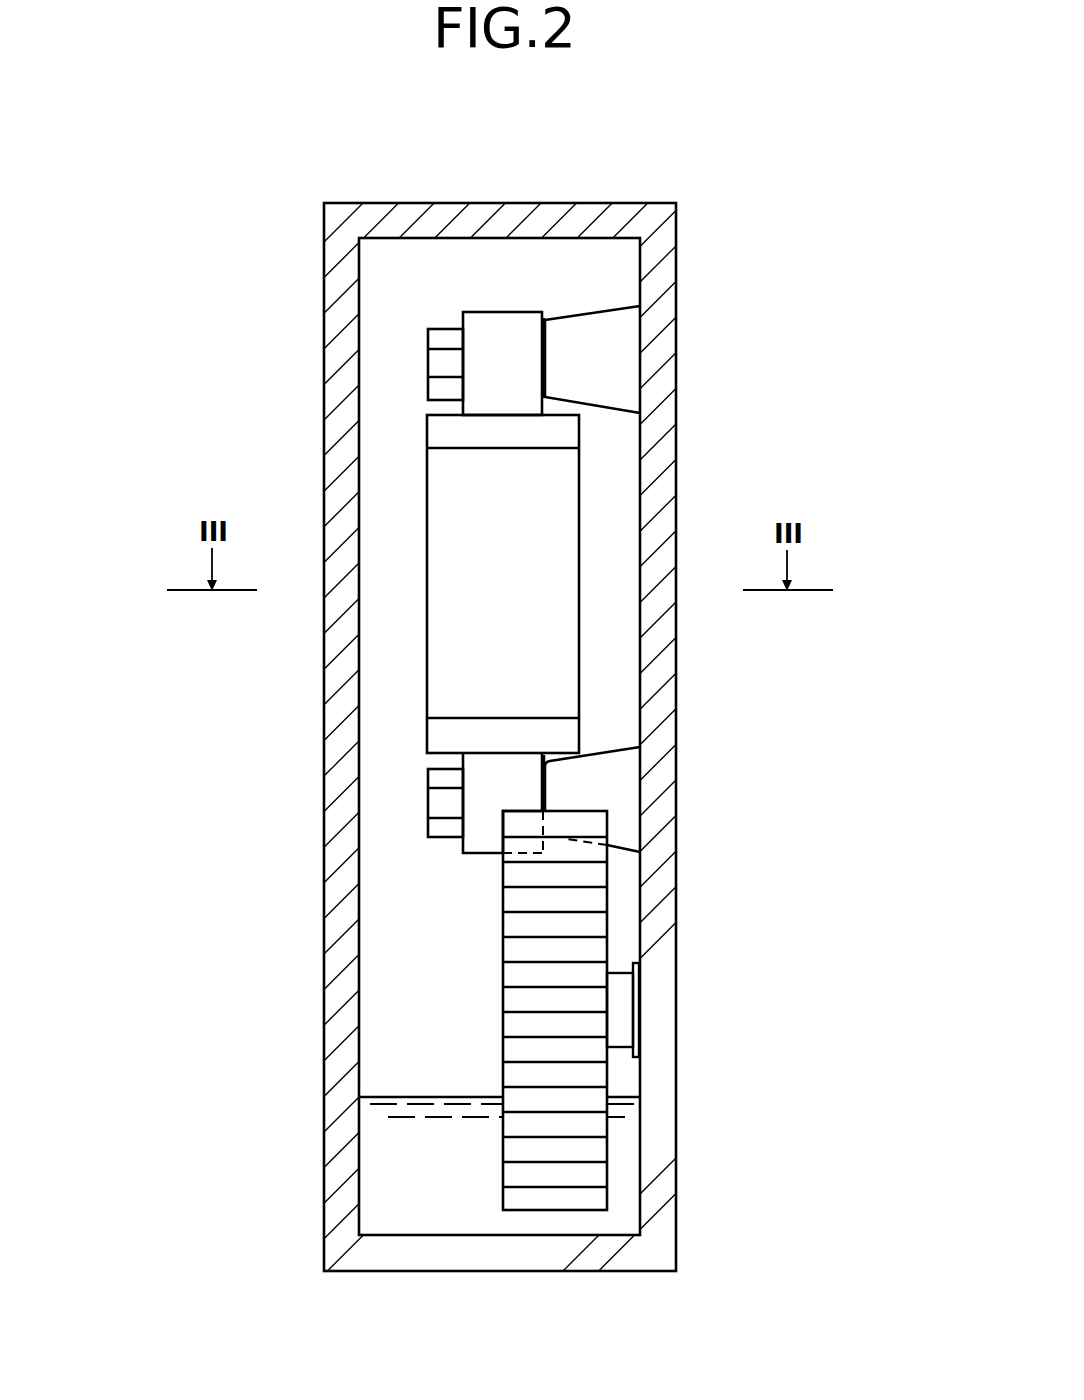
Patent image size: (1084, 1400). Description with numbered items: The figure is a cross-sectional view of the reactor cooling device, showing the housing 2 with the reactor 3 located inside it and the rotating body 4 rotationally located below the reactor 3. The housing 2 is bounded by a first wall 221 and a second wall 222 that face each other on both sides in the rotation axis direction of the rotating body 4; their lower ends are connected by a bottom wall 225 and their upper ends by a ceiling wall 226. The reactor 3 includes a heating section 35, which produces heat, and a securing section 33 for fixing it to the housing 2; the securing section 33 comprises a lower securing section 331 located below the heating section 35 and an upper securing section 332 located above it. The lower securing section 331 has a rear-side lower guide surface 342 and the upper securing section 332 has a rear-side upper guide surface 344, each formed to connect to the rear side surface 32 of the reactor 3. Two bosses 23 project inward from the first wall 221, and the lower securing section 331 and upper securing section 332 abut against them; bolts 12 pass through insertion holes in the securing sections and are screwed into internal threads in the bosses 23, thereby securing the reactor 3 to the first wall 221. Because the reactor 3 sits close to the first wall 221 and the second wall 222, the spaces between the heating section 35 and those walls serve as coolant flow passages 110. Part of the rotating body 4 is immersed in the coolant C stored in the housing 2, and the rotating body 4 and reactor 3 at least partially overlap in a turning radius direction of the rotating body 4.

The housing 2 is at (542, 700).
The first wall 221 is at (658, 700).
The second wall 222 is at (340, 782).
The bottom wall 225 is at (502, 1255).
The ceiling wall 226 is at (590, 218).
The coolant flow passage 110 is at (615, 462).
The bolt 12 is at (427, 366).
The boss 23 is at (603, 363).
The reactor 3 is at (494, 535).
The rear side surface 32 is at (462, 557).
The heating section 35 is at (545, 640).
The securing section 33 is at (361, 535).
The lower securing section 331 is at (488, 842).
The upper securing section 332 is at (493, 338).
The rear-side lower guide surface 342 is at (503, 774).
The rear-side upper guide surface 344 is at (517, 352).
The rotating body 4 is at (570, 945).
The coolant C is at (407, 1152).